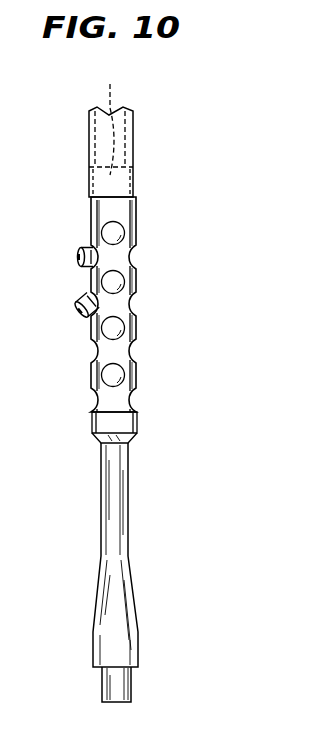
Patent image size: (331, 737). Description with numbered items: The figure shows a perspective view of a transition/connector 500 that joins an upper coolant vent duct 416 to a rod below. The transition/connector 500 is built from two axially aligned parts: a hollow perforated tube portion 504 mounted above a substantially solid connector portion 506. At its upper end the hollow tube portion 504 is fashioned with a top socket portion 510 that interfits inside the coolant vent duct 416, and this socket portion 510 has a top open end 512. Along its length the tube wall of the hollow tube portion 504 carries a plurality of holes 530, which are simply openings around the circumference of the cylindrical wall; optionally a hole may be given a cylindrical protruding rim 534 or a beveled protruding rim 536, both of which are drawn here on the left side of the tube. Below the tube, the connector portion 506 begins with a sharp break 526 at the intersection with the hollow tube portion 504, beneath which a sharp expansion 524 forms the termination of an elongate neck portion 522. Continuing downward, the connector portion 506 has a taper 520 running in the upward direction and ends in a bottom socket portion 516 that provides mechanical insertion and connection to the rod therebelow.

The coolant vent duct 416 is at (134, 137).
The top open end 512 is at (111, 116).
The top socket portion 510 is at (120, 181).
The transition/connector 500 is at (123, 381).
The hollow perforated tube portion 504 is at (145, 326).
The holes 530 is at (135, 258).
The cylindrical protruding rim 534 is at (88, 249).
The beveled protruding rim 536 is at (85, 321).
The sharp break 526 is at (137, 436).
The sharp expansion 524 is at (130, 442).
The elongate neck portion 522 is at (101, 505).
The connector portion 506 is at (131, 573).
The taper 520 is at (134, 605).
The bottom socket portion 516 is at (131, 682).